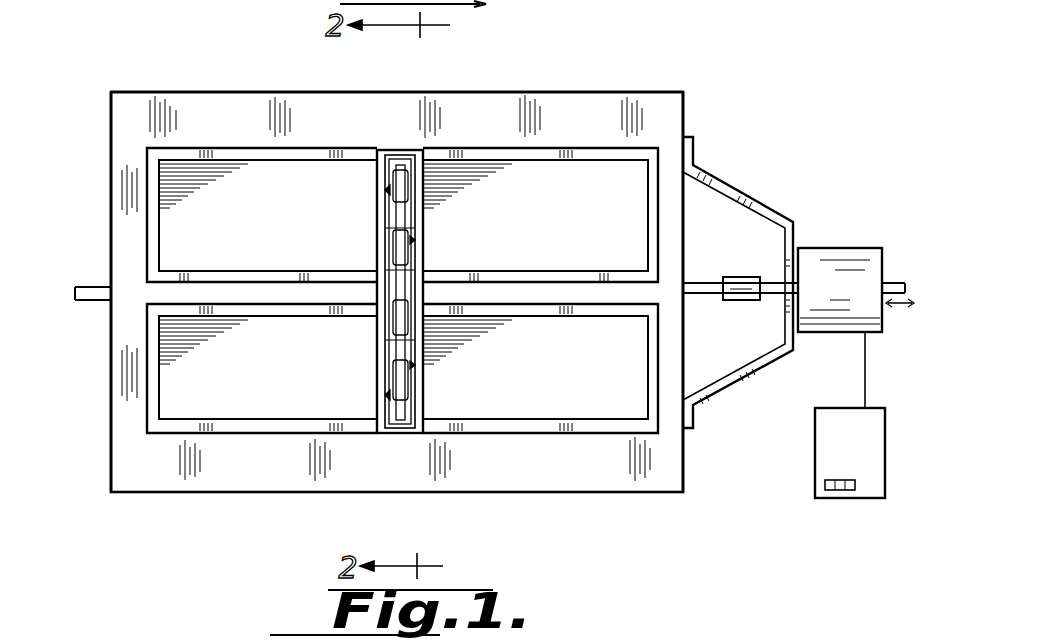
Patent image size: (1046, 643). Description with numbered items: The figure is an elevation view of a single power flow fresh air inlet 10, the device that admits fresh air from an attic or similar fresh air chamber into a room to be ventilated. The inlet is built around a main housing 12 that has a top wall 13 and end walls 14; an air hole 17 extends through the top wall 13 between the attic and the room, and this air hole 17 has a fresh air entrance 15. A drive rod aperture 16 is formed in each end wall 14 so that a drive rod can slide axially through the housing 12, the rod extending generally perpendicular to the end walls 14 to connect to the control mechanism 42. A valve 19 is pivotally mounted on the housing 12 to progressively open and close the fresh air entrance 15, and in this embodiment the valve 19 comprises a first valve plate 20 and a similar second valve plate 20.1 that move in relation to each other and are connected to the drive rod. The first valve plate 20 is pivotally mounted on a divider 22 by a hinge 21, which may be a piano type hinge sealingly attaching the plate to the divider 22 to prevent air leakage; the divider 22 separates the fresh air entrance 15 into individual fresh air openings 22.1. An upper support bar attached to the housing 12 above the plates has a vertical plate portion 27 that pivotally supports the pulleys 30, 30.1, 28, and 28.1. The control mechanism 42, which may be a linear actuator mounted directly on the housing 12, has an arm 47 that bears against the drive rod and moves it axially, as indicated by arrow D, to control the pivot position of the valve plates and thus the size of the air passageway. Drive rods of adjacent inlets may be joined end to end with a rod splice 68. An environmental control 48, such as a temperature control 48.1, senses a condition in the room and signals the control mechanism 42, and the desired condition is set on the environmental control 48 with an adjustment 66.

The power flow fresh air inlet 10 is at (652, 493).
The main housing 12 is at (131, 123).
The top wall 13 is at (620, 105).
The end walls 14 is at (111, 188).
The fresh air entrance 15 is at (248, 170).
The drive rod aperture 16 is at (111, 284).
The air hole 17 is at (183, 178).
The valve 19 is at (627, 232).
The first valve plate 20 is at (596, 377).
The second valve plate 20.1 is at (612, 222).
The hinge 21 is at (197, 272).
The divider 22 is at (347, 290).
The fresh air openings 22.1 is at (512, 162).
The vertical plate portion 27 is at (378, 212).
The pulley 28 is at (383, 318).
The pulley 28.1 is at (424, 240).
The pulley 30 is at (425, 392).
The pulley 30.1 is at (374, 157).
The control mechanism 42 is at (836, 264).
The arm 47 is at (893, 283).
The environmental control 48 is at (822, 520).
The temperature control 48.1 is at (826, 445).
The adjustment 66 is at (848, 498).
The rod splice 68 is at (744, 277).